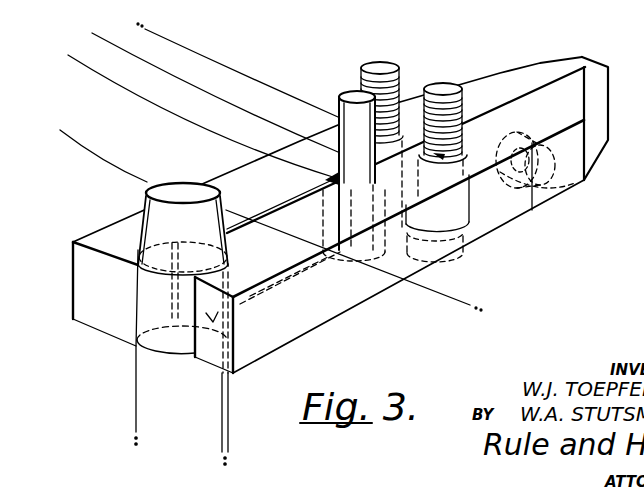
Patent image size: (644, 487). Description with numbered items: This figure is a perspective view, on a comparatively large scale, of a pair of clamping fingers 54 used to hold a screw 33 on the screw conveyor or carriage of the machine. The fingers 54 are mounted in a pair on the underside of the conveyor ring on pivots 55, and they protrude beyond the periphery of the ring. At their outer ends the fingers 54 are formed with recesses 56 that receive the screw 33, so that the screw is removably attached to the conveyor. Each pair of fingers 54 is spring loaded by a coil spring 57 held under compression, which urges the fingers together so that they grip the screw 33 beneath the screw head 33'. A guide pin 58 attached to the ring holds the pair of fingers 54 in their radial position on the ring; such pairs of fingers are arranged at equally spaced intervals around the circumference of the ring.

The screw 33 is at (160, 353).
The screw head 33' is at (161, 229).
The fingers 54 is at (468, 80).
The pivots 55 is at (380, 64).
The recesses 56 is at (230, 266).
The coil spring 57 is at (572, 187).
The guide pin 58 is at (350, 92).